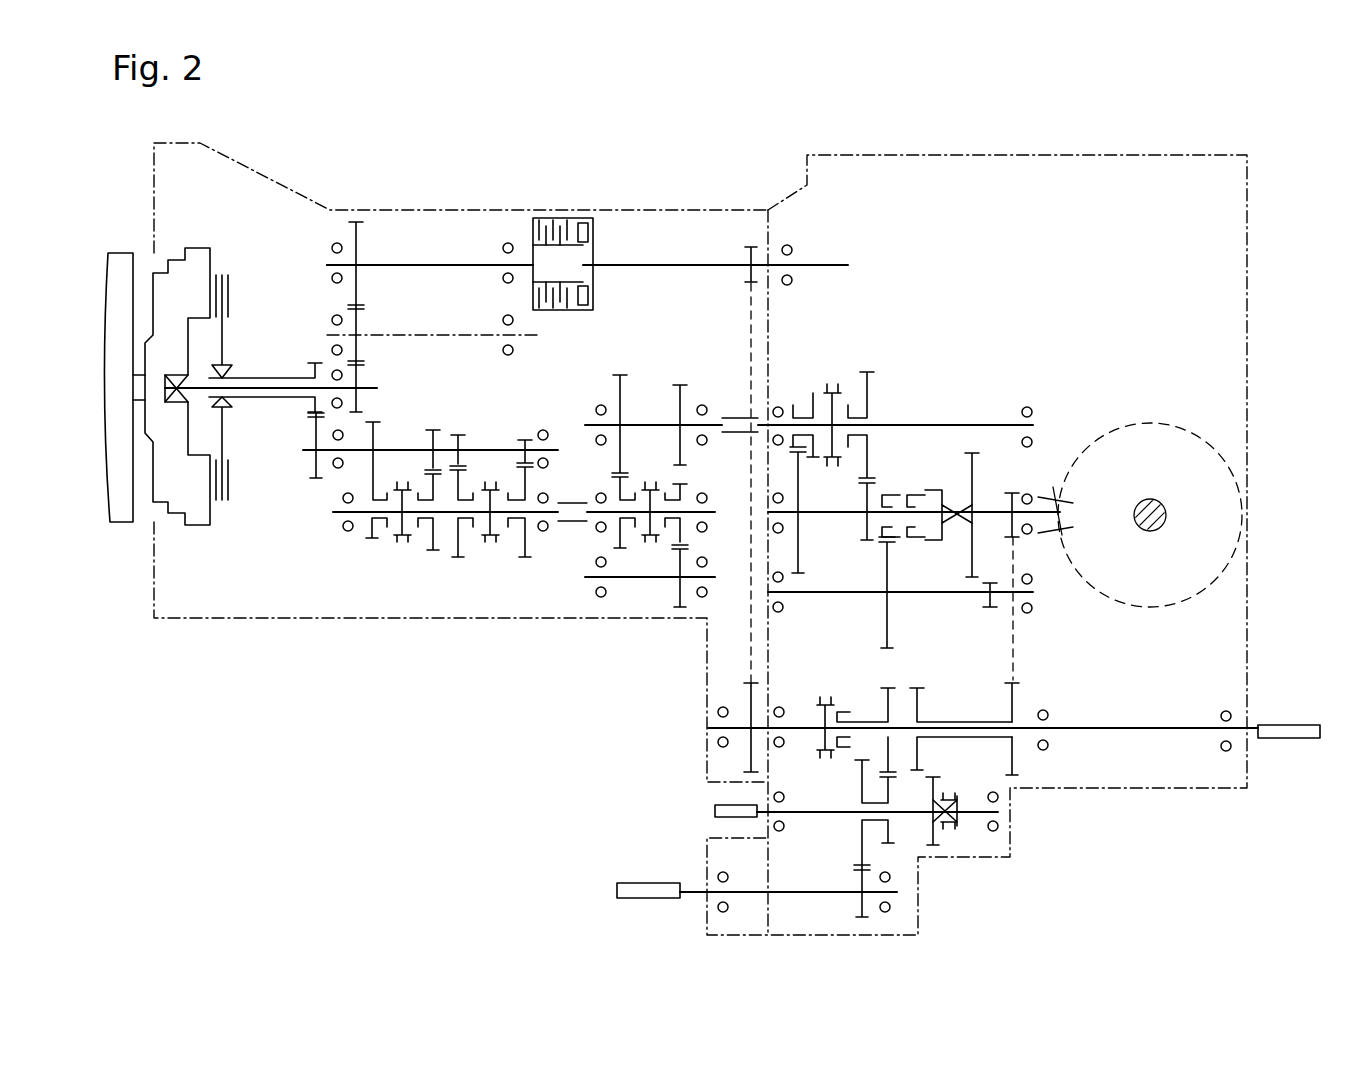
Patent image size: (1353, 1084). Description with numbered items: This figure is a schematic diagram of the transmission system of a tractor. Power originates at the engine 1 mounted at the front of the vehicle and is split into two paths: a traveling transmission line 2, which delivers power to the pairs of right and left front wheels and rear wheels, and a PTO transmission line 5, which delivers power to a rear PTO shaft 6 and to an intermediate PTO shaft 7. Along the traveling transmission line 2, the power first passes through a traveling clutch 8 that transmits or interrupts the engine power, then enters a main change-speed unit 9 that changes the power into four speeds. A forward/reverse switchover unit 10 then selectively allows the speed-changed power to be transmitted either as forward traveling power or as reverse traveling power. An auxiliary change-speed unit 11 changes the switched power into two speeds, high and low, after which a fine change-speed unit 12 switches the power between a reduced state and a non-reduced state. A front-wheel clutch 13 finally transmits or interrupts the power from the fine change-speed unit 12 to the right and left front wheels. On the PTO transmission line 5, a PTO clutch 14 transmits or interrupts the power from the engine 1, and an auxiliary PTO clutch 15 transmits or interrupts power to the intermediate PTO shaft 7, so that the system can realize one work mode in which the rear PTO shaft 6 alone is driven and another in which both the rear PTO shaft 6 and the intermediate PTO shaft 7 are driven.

The engine 1 is at (120, 252).
The traveling transmission line 2 is at (324, 582).
The PTO transmission line 5 is at (440, 239).
The rear PTO shaft 6 is at (1285, 727).
The intermediate PTO shaft 7 is at (650, 882).
The traveling clutch 8 is at (227, 259).
The main change-speed unit 9 is at (424, 581).
The forward/reverse switchover unit 10 is at (636, 606).
The auxiliary change-speed unit 11 is at (893, 349).
The fine change-speed unit 12 is at (934, 465).
The front-wheel clutch 13 is at (953, 848).
The PTO clutch 14 is at (565, 312).
The auxiliary PTO clutch 15 is at (825, 683).